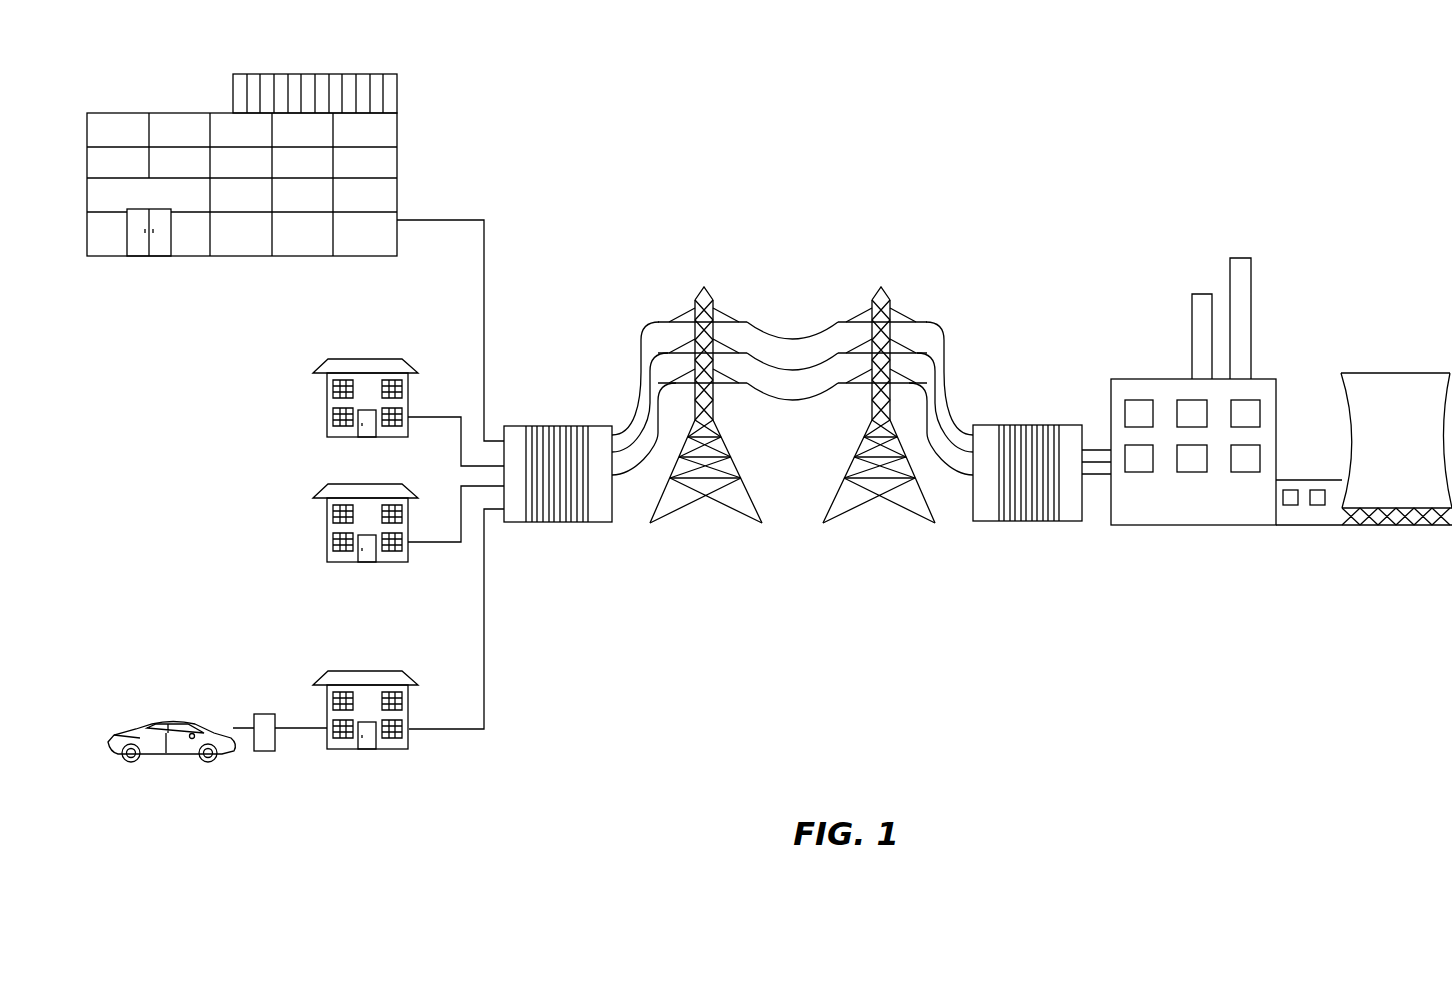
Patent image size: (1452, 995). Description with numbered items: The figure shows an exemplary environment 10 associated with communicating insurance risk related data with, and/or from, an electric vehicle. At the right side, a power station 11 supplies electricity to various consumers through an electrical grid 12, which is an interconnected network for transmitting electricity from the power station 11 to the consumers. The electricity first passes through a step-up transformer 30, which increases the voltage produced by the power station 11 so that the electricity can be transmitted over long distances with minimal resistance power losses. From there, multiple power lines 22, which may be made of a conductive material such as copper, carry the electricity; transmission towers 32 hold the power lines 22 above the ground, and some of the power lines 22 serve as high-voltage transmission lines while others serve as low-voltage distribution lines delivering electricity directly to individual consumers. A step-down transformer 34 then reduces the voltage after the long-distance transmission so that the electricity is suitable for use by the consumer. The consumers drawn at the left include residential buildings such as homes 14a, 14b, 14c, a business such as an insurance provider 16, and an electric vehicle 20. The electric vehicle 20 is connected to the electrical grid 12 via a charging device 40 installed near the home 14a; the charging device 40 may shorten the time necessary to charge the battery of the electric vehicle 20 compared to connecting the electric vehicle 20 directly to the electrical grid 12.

The environment 10 is at (1105, 97).
The power station 11 is at (1153, 379).
The electrical grid 12 is at (780, 672).
The home 14a is at (342, 671).
The home 14b is at (342, 484).
The home 14c is at (342, 359).
The insurance provider 16 is at (168, 112).
The electric vehicle 20 is at (172, 722).
The power lines 22 is at (486, 272).
The step-up transformer 30 is at (1068, 425).
The transmission towers 32 is at (698, 297).
The step-down transformer 34 is at (552, 426).
The charging device 40 is at (266, 714).